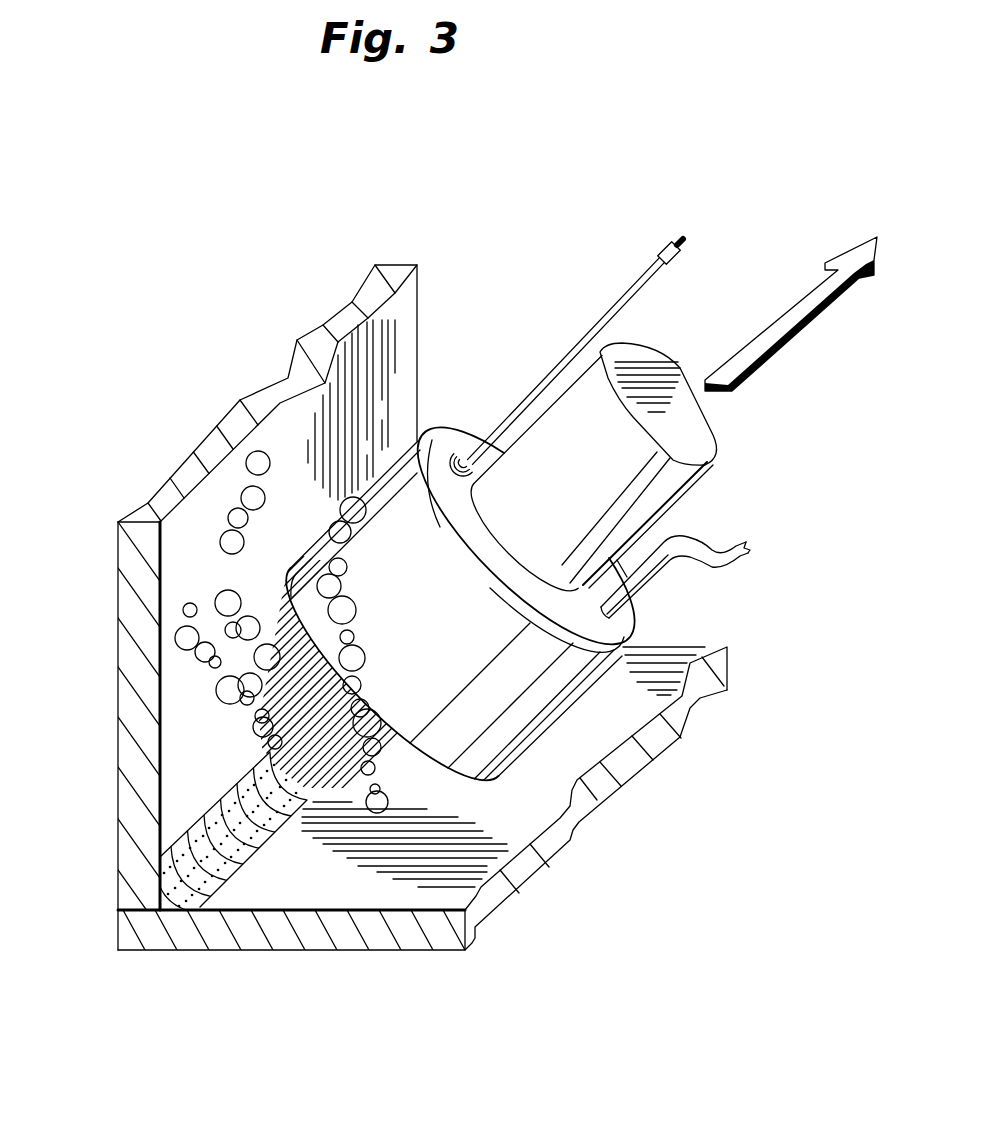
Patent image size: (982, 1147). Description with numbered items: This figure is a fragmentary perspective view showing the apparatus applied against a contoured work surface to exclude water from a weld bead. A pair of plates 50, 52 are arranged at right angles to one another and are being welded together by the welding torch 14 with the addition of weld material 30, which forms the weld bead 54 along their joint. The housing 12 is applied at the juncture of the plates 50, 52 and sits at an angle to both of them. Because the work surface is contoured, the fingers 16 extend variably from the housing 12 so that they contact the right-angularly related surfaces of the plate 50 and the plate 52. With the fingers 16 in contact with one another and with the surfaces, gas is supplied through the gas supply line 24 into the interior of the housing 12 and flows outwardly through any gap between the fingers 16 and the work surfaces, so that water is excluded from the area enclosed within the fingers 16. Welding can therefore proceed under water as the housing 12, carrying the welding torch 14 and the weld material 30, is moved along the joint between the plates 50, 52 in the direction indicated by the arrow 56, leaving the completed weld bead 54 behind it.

The housing 12 is at (490, 702).
The welding torch 14 is at (672, 472).
The fingers 16 is at (388, 770).
The gas supply line 24 is at (718, 566).
The weld material 30 is at (673, 248).
The plate 50 is at (120, 642).
The plate 52 is at (247, 937).
The weld bead 54 is at (200, 862).
The arrow 56 is at (789, 325).